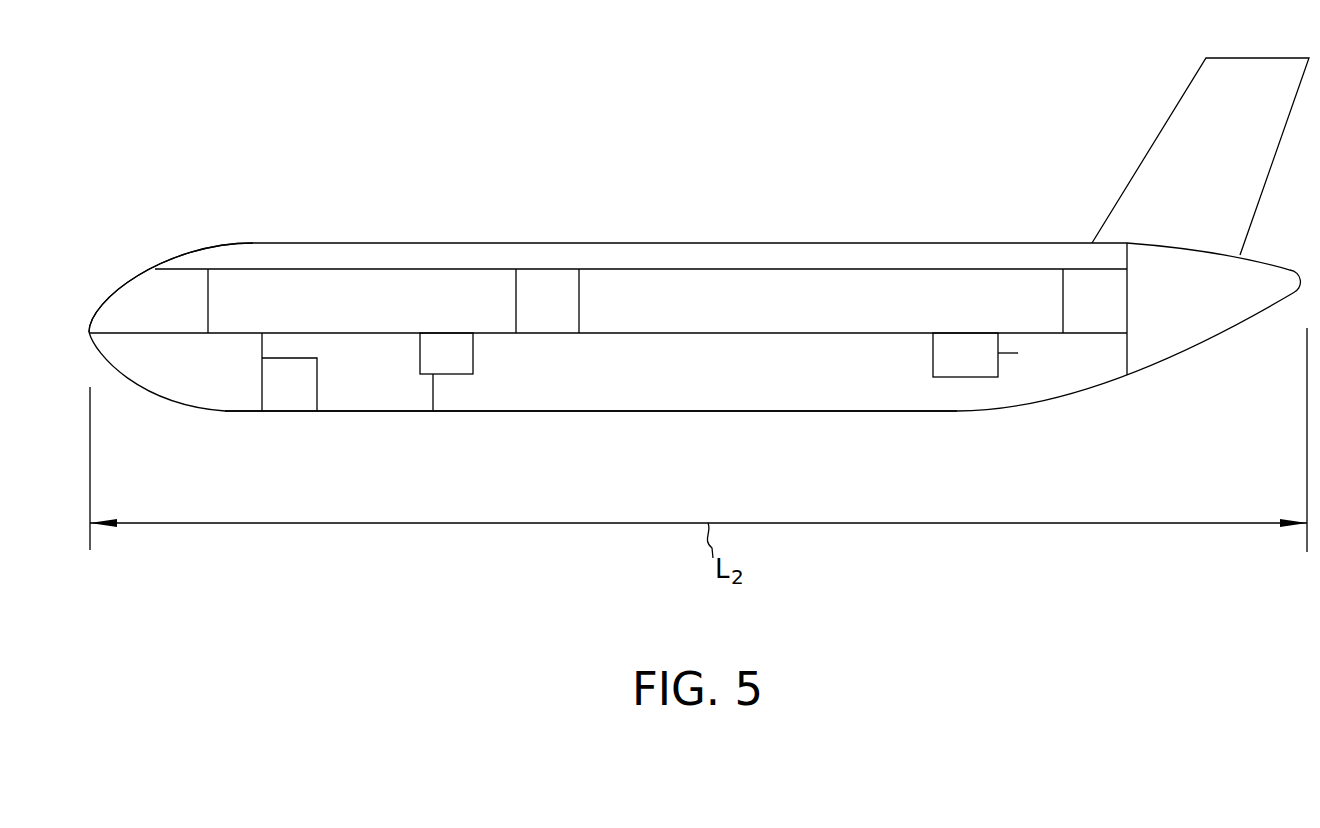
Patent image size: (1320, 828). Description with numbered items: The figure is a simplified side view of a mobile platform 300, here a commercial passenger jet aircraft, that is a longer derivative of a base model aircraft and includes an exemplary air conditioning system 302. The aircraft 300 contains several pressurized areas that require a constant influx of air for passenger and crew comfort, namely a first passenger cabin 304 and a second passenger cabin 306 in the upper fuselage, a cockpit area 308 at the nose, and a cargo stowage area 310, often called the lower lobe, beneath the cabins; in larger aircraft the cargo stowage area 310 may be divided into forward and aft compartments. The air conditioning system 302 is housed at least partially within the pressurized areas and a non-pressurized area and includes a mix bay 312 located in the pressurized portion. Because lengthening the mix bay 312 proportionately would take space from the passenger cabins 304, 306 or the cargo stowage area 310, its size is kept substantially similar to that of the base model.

The mobile platform 300 is at (868, 182).
The air conditioning system 302 is at (1000, 370).
The first passenger cabin 304 is at (400, 315).
The second passenger cabin 306 is at (700, 300).
The cockpit area 308 is at (150, 303).
The cargo stowage area 310 is at (626, 374).
The mix bay 312 is at (968, 357).